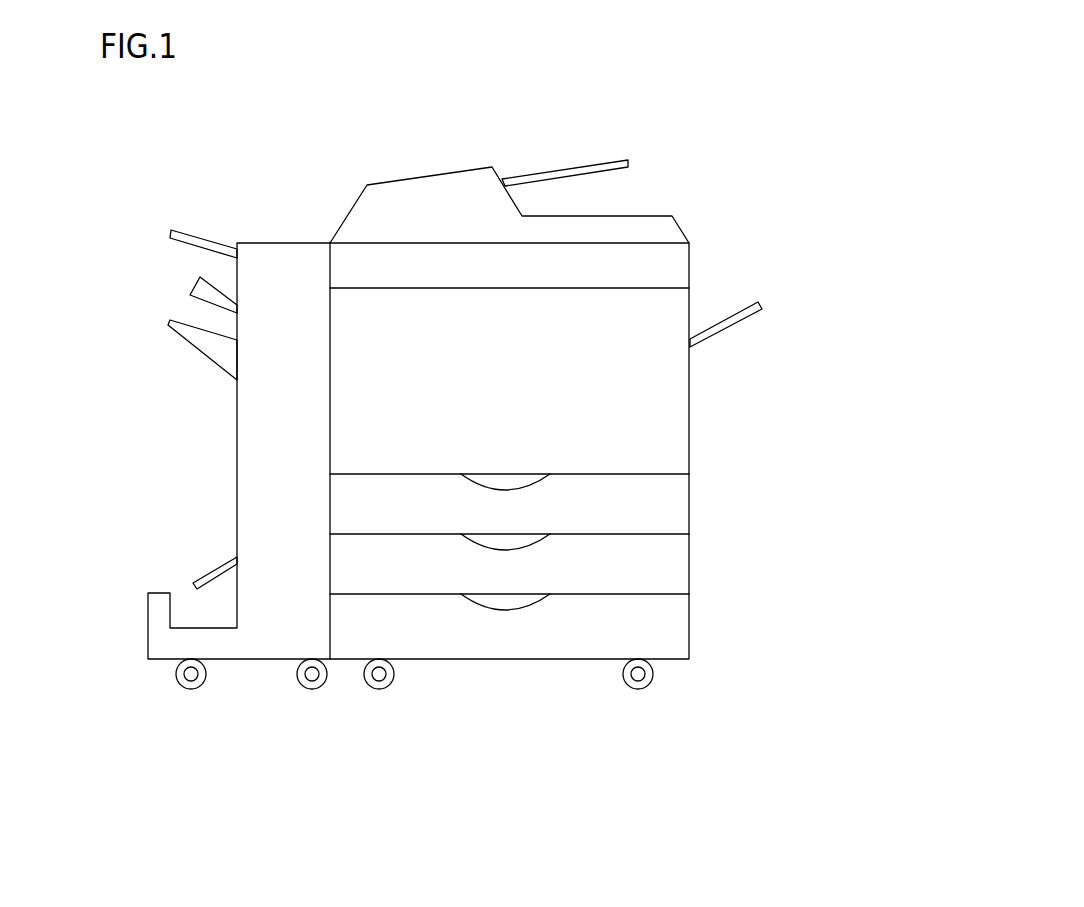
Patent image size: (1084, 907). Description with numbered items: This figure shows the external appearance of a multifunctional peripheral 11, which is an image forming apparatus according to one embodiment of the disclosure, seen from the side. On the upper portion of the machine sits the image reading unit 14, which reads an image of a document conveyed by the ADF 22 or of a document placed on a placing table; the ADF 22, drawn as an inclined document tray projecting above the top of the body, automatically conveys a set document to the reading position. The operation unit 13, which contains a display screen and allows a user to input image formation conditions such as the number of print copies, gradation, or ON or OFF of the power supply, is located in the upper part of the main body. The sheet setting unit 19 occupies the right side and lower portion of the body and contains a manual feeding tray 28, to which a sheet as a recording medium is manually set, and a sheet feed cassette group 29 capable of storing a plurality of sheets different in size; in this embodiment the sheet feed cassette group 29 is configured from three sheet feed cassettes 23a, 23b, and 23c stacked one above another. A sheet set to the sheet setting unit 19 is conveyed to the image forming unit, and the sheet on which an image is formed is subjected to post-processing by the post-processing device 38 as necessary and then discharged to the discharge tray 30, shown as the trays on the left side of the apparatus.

The multifunctional peripheral 11 is at (740, 150).
The operation unit 13 is at (575, 257).
The image reading unit 14 is at (697, 212).
The sheet setting unit 19 is at (855, 302).
The ADF (Auto Document Feeder) 22 is at (508, 157).
The sheet feed cassette 23a is at (702, 503).
The sheet feed cassette 23b is at (702, 560).
The sheet feed cassette 23c is at (702, 625).
The manual feeding tray 28 is at (756, 331).
The sheet feed cassette group 29 is at (818, 475).
The discharge tray 30 is at (200, 372).
The post-processing device 38 is at (255, 703).